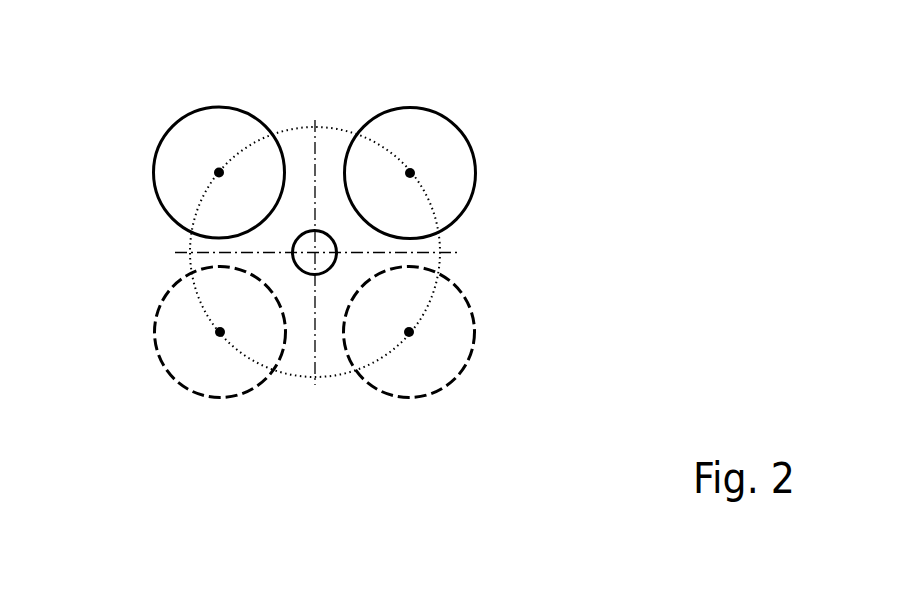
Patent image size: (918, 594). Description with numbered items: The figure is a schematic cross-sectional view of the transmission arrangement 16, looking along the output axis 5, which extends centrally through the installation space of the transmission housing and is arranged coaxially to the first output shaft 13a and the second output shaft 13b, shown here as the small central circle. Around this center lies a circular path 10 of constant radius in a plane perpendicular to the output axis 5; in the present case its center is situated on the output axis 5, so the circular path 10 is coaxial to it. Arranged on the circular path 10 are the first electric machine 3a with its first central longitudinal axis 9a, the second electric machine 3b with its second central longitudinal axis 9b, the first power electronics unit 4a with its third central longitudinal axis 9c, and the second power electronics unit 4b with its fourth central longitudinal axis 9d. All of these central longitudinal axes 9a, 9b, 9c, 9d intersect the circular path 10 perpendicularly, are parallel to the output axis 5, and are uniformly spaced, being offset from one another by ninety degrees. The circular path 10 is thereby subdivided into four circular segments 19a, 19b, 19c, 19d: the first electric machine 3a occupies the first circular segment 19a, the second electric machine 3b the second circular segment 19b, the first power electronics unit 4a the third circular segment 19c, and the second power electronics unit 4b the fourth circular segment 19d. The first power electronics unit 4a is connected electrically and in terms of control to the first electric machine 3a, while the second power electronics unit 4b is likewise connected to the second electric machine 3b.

The first electric machine 3a is at (233, 107).
The second electric machine 3b is at (468, 205).
The first power electronics unit 4a is at (176, 371).
The second power electronics unit 4b is at (455, 382).
The output axis 5 is at (314, 252).
The first central longitudinal axis 9a is at (219, 172).
The second central longitudinal axis 9b is at (410, 173).
The third central longitudinal axis 9c is at (220, 332).
The fourth central longitudinal axis 9d is at (409, 332).
The circular path 10 is at (332, 128).
The first output shaft 13a is at (325, 367).
The second output shaft 13b is at (315, 253).
The transmission arrangement 16 is at (487, 118).
The first circular segment 19a is at (228, 148).
The second circular segment 19b is at (438, 193).
The third circular segment 19c is at (240, 362).
The fourth circular segment 19d is at (402, 357).